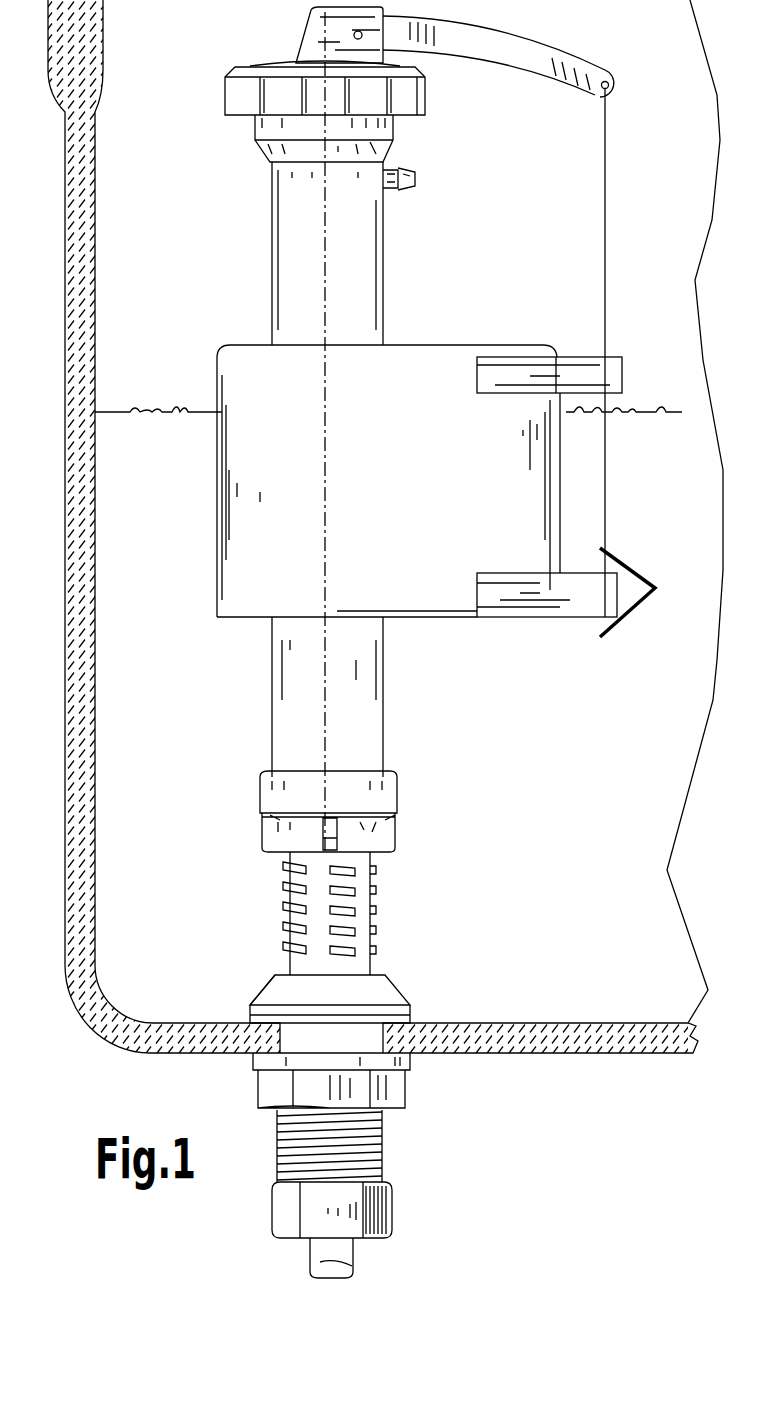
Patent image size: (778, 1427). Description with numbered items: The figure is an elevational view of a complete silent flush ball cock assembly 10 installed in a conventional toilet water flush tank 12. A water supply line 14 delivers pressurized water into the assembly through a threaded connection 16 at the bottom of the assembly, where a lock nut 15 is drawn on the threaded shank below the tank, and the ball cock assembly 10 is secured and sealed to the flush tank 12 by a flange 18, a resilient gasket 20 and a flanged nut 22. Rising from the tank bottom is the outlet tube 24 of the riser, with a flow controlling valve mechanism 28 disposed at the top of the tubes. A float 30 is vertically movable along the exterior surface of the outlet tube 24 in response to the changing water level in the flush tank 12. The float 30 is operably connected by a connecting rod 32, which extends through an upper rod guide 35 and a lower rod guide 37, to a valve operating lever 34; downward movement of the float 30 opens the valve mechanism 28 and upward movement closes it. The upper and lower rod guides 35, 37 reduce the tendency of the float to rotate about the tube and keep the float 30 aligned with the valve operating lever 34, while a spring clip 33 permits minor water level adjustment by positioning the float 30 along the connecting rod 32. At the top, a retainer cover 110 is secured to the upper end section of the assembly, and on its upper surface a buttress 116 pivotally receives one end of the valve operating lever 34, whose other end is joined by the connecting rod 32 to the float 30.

The silent flush ball cock assembly 10 is at (214, 240).
The toilet water flush tank 12 is at (548, 1044).
The water supply line 14 is at (340, 1258).
The lock nut 15 is at (372, 1210).
The threaded connection 16 is at (352, 1150).
The flange 18 is at (395, 995).
The resilient gasket 20 is at (258, 1020).
The flanged nut 22 is at (283, 1087).
The outlet tube 24 is at (380, 965).
The flow controlling valve mechanism 28 is at (214, 142).
The float 30 is at (217, 481).
The connecting rod 32 is at (605, 232).
The spring clip 33 is at (635, 603).
The valve operating lever 34 is at (608, 70).
The upper rod guide 35 is at (585, 375).
The lower rod guide 37 is at (573, 593).
The retainer cover 110 is at (245, 98).
The buttress 116 is at (320, 35).